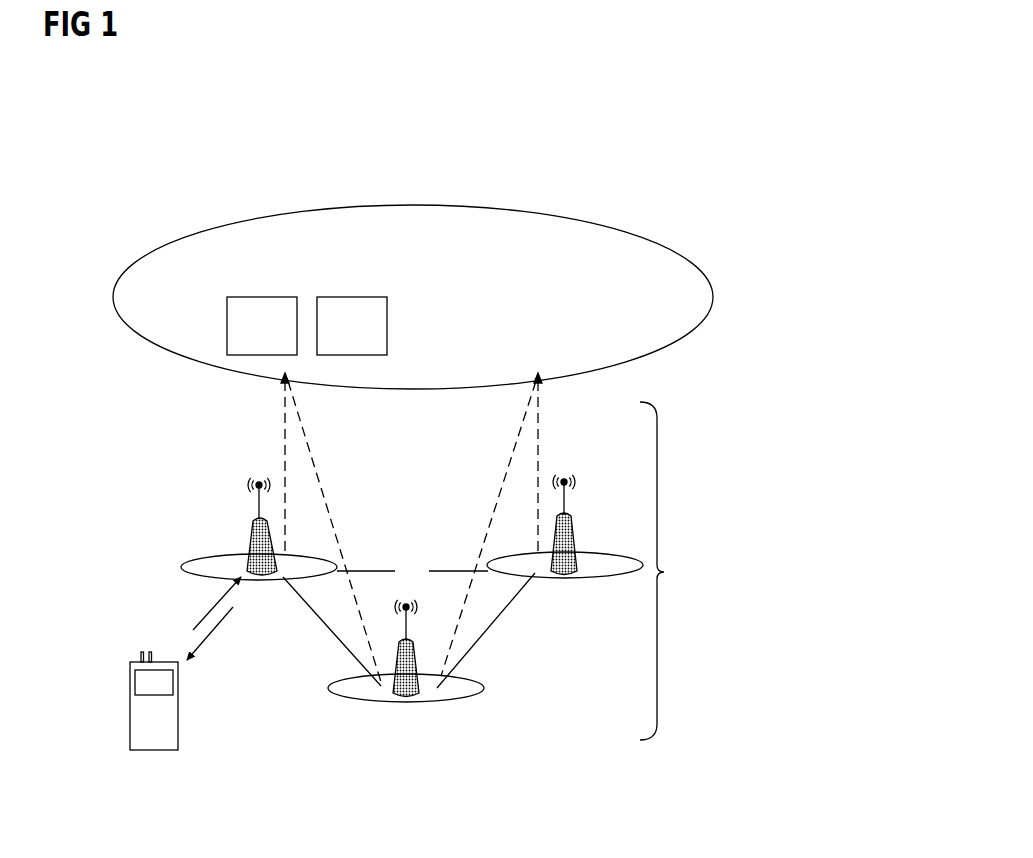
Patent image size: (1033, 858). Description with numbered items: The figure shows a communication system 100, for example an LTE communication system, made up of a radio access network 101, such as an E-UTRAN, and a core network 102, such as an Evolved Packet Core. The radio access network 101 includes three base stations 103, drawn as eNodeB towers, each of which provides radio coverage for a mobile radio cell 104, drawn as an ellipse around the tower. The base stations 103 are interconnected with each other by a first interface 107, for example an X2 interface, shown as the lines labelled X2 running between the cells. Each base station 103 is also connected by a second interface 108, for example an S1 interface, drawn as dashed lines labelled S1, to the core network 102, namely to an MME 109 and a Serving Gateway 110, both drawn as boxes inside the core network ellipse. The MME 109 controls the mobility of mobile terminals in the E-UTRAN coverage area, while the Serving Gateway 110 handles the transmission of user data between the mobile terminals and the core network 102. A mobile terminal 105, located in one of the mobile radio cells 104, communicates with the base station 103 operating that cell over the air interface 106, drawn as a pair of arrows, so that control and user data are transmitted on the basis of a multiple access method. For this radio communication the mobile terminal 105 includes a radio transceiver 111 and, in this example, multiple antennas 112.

The communication system 100 is at (708, 138).
The radio access network 101 is at (745, 550).
The core network 102 is at (700, 273).
The base station 103 is at (252, 526).
The mobile radio cell 104 is at (197, 573).
The mobile terminal 105 is at (130, 716).
The air interface 106 is at (230, 628).
The first interface 107 is at (318, 650).
The second interface 108 is at (286, 412).
The MME 109 is at (262, 297).
The Serving Gateway 110 is at (352, 297).
The radio transceiver 111 is at (153, 697).
The antennas 112 is at (130, 637).